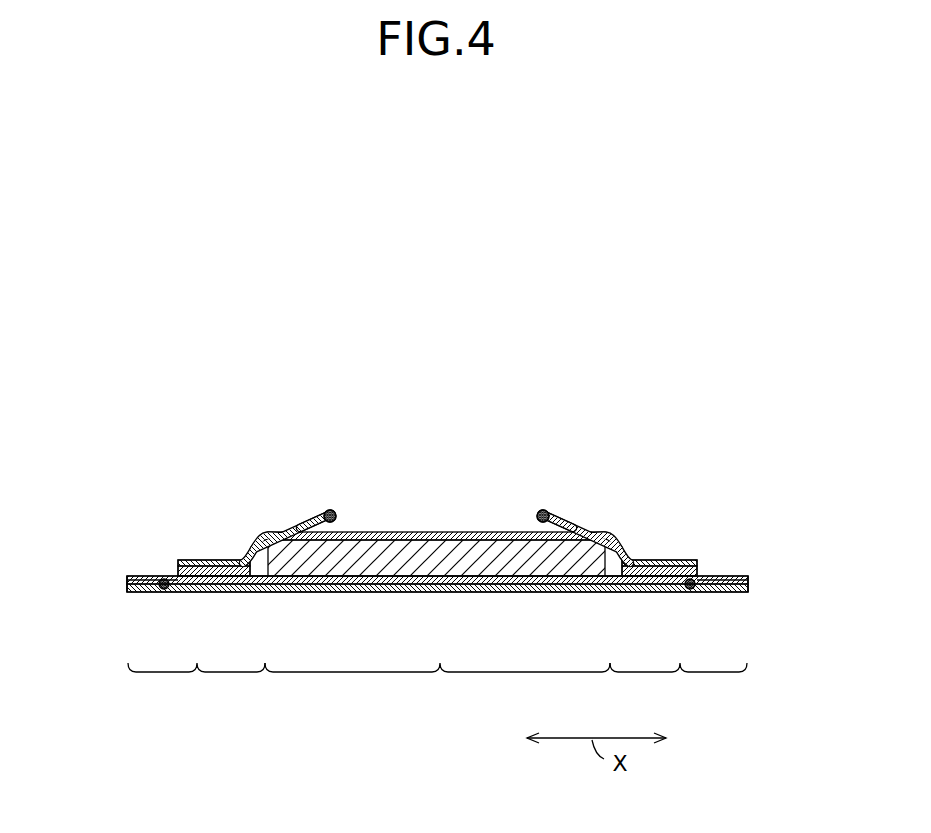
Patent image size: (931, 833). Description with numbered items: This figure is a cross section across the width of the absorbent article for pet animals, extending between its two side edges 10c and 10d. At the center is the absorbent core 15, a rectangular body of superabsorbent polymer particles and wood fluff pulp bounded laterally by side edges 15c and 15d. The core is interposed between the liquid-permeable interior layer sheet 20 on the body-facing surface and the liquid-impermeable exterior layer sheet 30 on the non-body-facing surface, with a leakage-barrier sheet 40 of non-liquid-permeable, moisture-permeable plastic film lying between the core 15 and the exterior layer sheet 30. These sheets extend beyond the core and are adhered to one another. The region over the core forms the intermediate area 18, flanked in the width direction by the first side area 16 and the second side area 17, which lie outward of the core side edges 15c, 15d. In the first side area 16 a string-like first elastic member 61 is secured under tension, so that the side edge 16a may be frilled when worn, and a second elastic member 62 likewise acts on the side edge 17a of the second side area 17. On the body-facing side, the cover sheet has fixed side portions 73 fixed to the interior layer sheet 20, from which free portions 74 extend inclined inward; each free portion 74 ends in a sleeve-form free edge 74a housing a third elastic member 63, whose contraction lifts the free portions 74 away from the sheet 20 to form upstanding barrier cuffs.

The side edge 10c is at (127, 580).
The side edge 10d is at (748, 580).
The absorbent core 15 is at (437, 610).
The side edge of absorbent core 15c is at (258, 592).
The side edge of absorbent core 15d is at (604, 590).
The first side area 16 is at (196, 685).
The side edge of first side area 16a is at (168, 576).
The second side area 17 is at (678, 685).
The side edge of second side area 17a is at (708, 576).
The intermediate area 18 is at (437, 685).
The liquid-permeable interior layer sheet 20 is at (437, 531).
The liquid-impermeable exterior layer sheet 30 is at (406, 581).
The leakage-barrier sheet 40 is at (461, 589).
The first elastic member 61 is at (165, 592).
The second elastic member 62 is at (691, 592).
The third elastic member 63 is at (340, 514).
The fixed side portion 73 is at (150, 576).
The free portion 74 is at (296, 521).
The free edge 74a is at (322, 510).